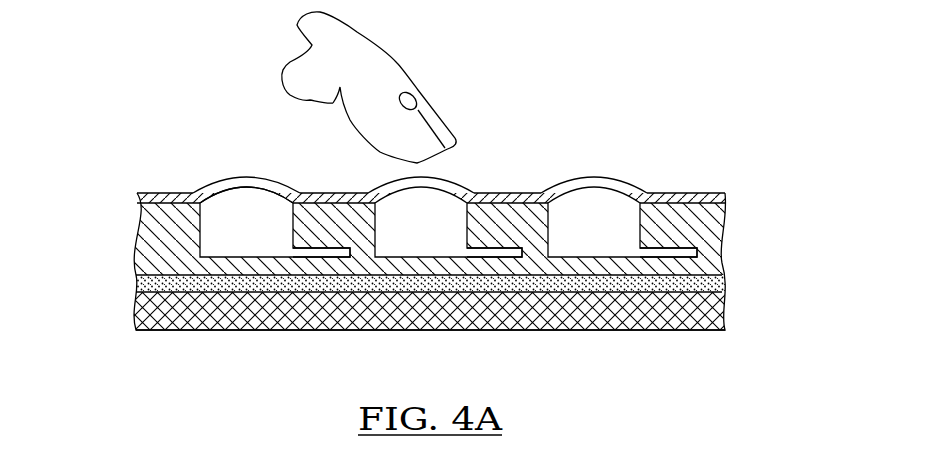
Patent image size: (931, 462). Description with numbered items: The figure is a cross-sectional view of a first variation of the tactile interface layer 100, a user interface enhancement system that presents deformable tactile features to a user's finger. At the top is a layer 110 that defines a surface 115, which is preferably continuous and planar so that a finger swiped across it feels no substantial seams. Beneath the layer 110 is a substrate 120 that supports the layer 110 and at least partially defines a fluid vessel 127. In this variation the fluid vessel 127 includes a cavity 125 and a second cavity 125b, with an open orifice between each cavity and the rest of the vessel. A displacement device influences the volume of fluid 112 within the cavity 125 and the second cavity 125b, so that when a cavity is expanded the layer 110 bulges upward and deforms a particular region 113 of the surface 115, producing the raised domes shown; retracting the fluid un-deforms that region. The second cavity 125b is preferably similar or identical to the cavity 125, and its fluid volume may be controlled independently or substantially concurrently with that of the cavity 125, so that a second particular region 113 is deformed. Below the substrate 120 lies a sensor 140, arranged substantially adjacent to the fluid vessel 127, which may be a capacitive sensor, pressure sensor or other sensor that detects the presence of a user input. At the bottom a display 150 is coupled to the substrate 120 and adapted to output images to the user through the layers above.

The tactile interface layer 100 is at (722, 112).
The layer 110 is at (684, 195).
The fluid 112 is at (226, 206).
The particular region 113 is at (427, 179).
The surface 115 is at (167, 192).
The substrate 120 is at (697, 233).
The cavity 125 is at (265, 241).
The second cavity 125b is at (449, 242).
The fluid vessel 127 is at (457, 249).
The sensor 140 is at (145, 283).
The display 150 is at (157, 317).